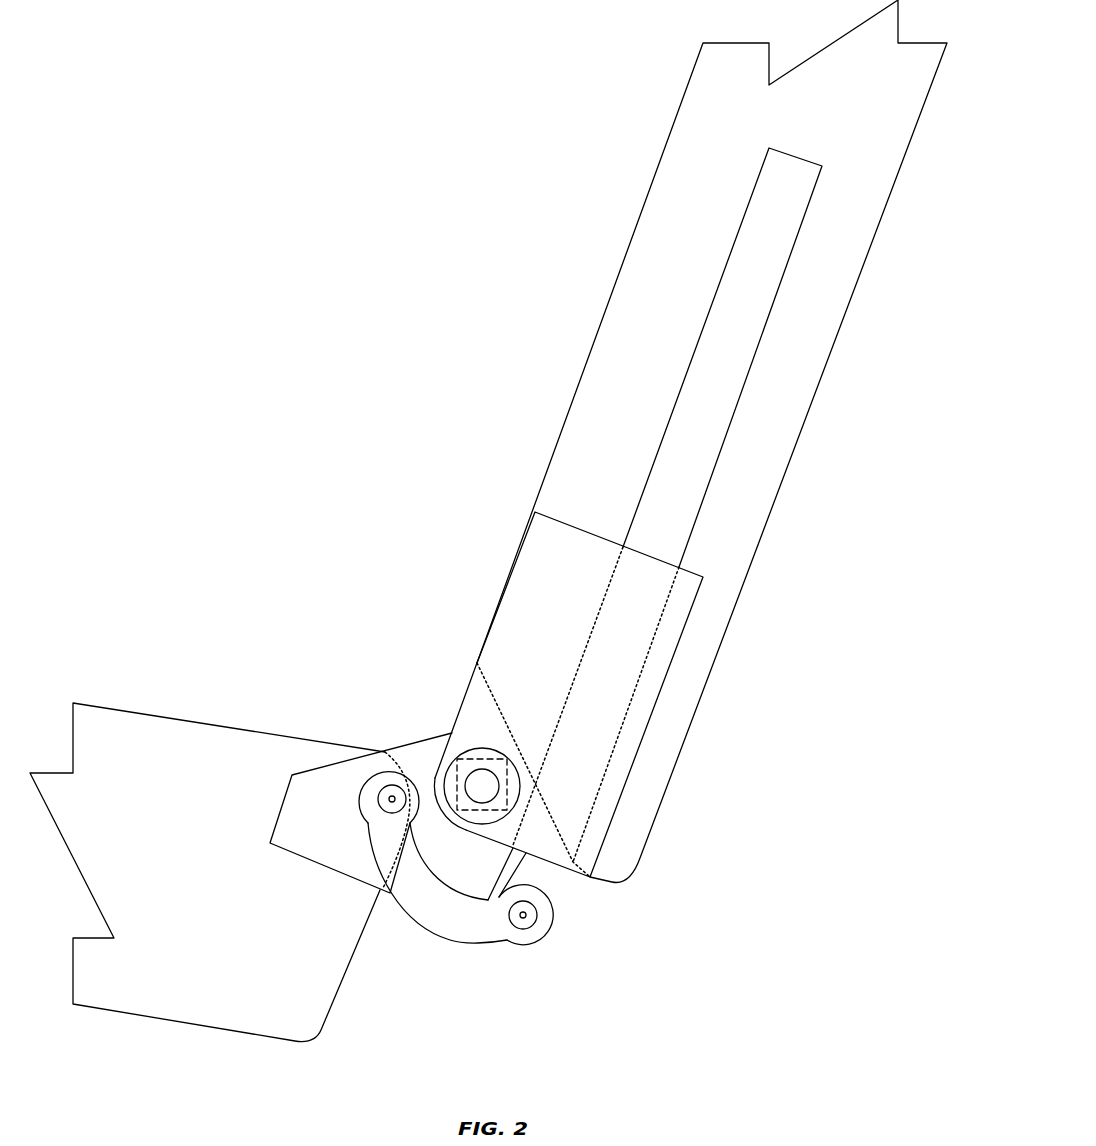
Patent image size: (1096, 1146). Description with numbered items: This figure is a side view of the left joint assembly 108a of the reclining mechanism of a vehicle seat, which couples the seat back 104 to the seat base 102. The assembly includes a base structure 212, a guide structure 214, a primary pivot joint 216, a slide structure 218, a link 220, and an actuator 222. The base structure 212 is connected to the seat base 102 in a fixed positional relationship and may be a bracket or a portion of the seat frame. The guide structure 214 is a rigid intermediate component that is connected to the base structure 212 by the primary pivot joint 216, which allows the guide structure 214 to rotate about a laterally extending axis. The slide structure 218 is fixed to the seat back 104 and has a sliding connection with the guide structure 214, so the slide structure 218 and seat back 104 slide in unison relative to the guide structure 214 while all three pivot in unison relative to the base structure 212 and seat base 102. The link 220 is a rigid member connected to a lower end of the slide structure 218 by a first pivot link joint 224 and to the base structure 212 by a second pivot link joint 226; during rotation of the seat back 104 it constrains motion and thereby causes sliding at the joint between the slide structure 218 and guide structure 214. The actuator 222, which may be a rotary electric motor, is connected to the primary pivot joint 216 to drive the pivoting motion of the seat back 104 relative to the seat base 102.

The seat base 102 is at (163, 718).
The seat back 104 is at (636, 222).
The left joint assembly 108a is at (328, 602).
The base structure 212 is at (285, 795).
The guide structure 214 is at (635, 758).
The primary pivot joint 216 is at (462, 752).
The slide structure 218 is at (730, 427).
The link 220 is at (463, 940).
The actuator 222 is at (490, 758).
The first pivot link joint 224 is at (383, 804).
The second pivot link joint 226 is at (523, 929).